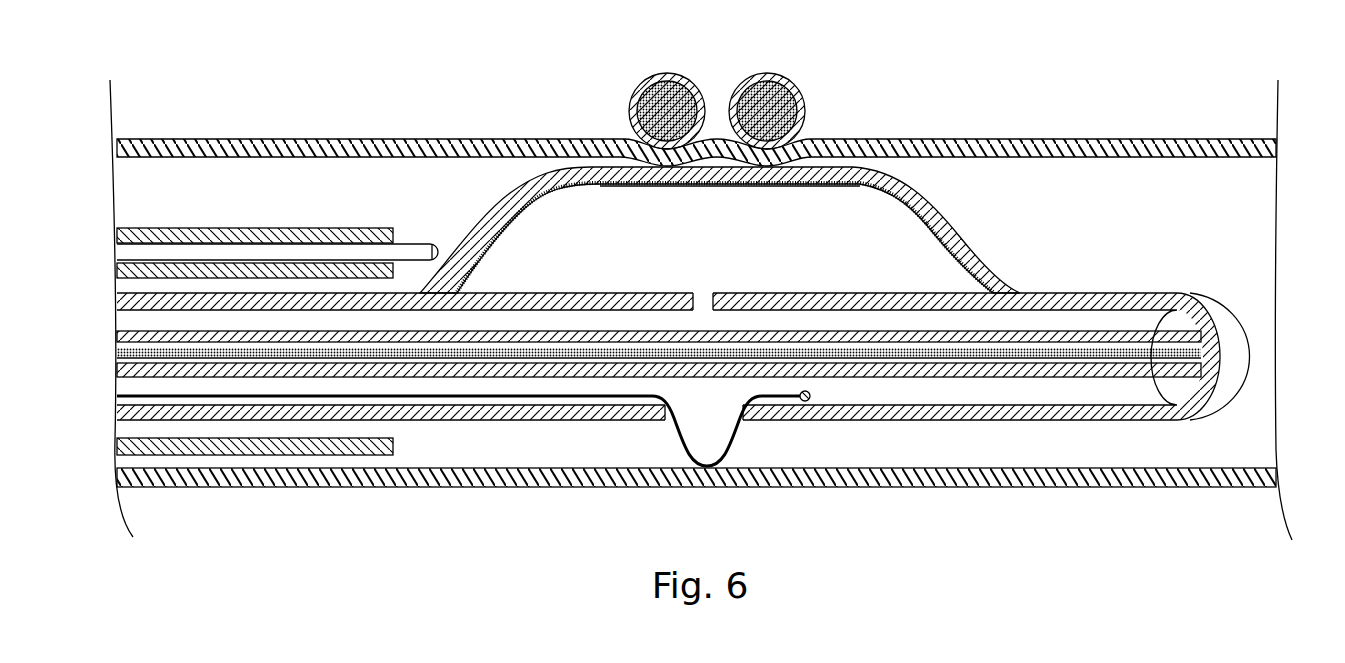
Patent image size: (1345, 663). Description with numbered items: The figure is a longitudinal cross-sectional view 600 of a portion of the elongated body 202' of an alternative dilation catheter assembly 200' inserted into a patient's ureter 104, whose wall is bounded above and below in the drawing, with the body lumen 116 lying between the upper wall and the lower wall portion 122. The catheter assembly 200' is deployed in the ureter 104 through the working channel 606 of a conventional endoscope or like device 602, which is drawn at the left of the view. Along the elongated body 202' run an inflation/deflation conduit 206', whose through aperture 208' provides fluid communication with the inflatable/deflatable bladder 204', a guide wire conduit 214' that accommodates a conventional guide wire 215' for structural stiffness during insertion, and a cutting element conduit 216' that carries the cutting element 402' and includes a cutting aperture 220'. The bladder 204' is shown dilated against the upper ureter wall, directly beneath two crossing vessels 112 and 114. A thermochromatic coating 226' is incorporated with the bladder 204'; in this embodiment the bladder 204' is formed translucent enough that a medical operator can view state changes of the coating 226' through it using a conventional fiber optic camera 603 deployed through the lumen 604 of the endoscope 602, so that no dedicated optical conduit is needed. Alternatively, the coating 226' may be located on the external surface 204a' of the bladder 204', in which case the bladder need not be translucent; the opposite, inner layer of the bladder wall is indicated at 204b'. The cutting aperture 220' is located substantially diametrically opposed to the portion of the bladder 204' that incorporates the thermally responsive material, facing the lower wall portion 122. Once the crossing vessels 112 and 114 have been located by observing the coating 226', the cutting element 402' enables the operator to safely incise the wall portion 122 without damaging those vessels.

The longitudinal cross-sectional view 600 is at (1052, 49).
The ureter 104 is at (419, 132).
The wall portion 122 is at (643, 464).
The body lumen 116 is at (1262, 190).
The crossing vessel 114 is at (681, 73).
The crossing vessel 112 is at (786, 73).
The endoscope 602 is at (290, 228).
The lumen 604 is at (394, 227).
The fiber optic camera 603 is at (418, 242).
The working channel 606 is at (386, 428).
The dilation catheter assembly 200' is at (683, 313).
The elongated body 202' is at (1213, 321).
The inflatable/deflatable bladder 204' is at (735, 227).
The external surface of the bladder 204a' is at (735, 230).
The balloon inner layer 204b' is at (725, 237).
The inflation/deflation conduit 206' is at (945, 288).
The through aperture 208' is at (722, 280).
The thermochromatic coating 226' is at (730, 217).
The guide wire conduit 214' is at (663, 392).
The guide wire 215' is at (663, 398).
The cutting element conduit 216' is at (960, 426).
The cutting element 402' is at (465, 428).
The cutting aperture 220' is at (733, 428).